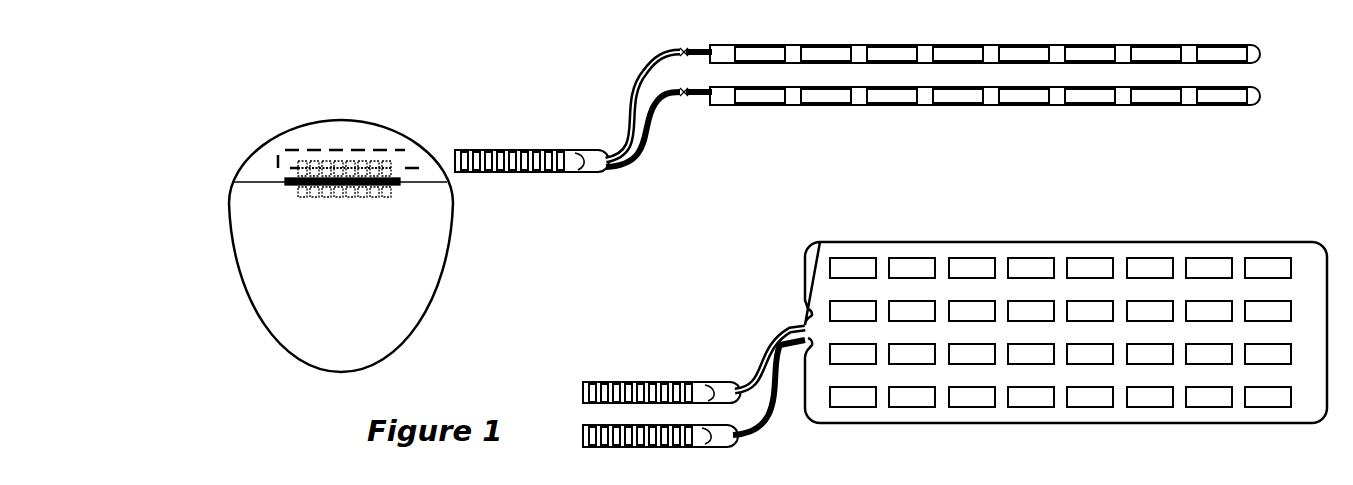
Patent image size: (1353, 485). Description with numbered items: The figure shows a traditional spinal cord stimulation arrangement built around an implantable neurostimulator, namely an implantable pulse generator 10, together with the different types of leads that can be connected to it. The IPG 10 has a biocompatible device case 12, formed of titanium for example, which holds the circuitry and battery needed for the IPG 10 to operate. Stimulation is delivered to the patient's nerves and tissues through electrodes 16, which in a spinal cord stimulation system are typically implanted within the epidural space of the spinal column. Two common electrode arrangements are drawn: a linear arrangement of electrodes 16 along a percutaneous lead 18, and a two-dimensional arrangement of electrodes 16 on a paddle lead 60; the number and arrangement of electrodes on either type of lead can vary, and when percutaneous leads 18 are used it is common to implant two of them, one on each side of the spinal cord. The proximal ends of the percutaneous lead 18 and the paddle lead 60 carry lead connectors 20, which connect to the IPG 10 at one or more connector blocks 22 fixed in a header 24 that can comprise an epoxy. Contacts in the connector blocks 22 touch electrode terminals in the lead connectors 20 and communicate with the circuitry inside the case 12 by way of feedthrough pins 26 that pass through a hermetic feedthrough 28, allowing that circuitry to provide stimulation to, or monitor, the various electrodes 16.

The implantable pulse generator 10 is at (243, 108).
The device case 12 is at (444, 293).
The electrodes 16 is at (843, 106).
The percutaneous lead 18 is at (1017, 125).
The lead connectors 20 is at (507, 173).
The connector blocks 22 is at (400, 148).
The header 24 is at (240, 167).
The feedthrough pins 26 is at (387, 197).
The hermetic feedthrough 28 is at (292, 187).
The paddle lead 60 is at (1085, 215).